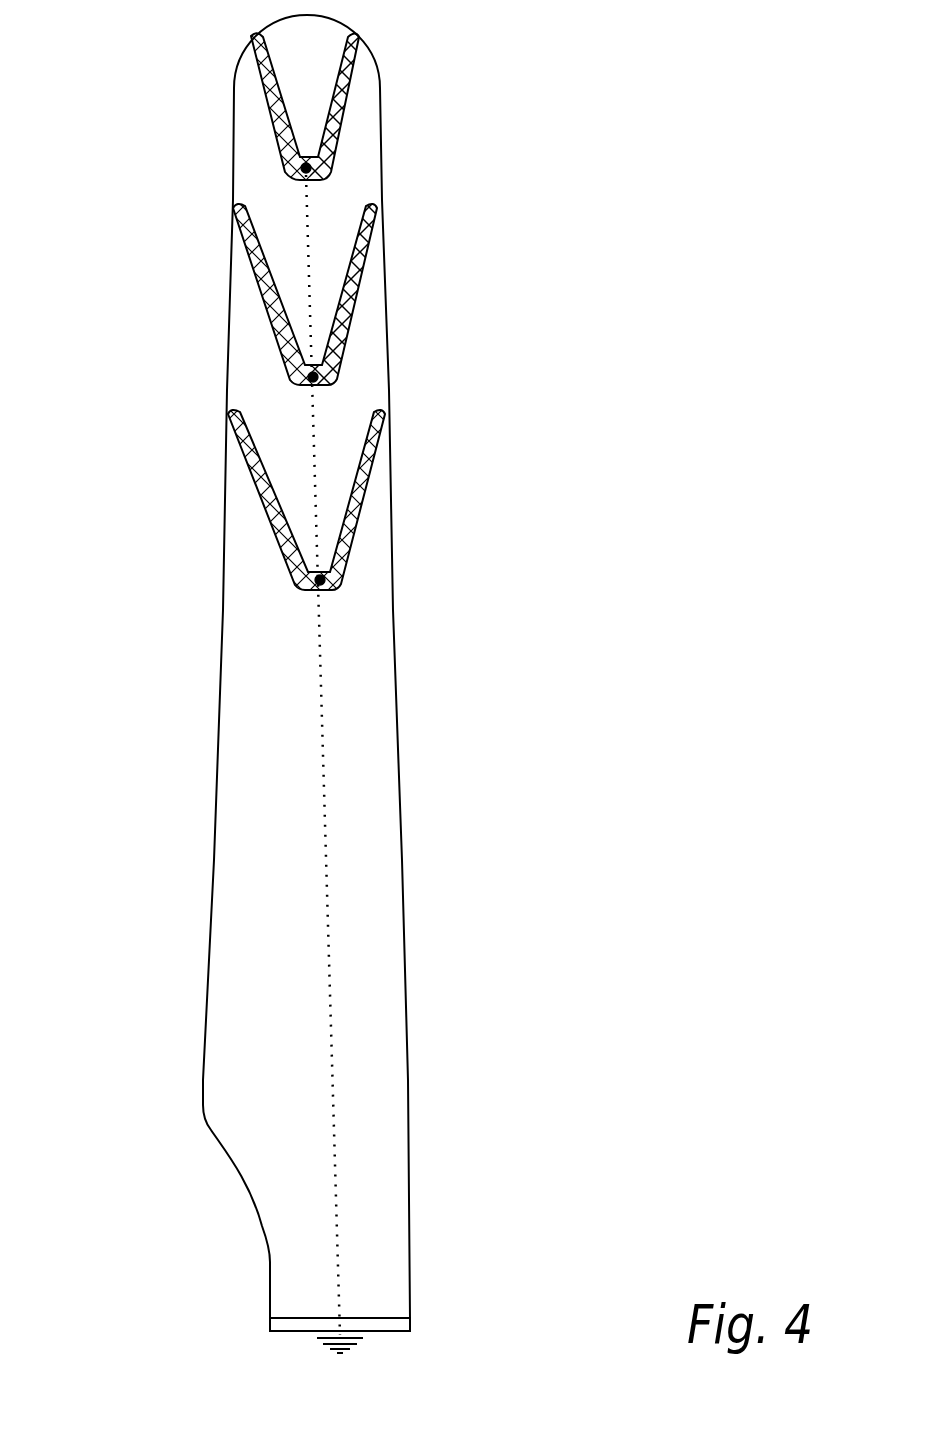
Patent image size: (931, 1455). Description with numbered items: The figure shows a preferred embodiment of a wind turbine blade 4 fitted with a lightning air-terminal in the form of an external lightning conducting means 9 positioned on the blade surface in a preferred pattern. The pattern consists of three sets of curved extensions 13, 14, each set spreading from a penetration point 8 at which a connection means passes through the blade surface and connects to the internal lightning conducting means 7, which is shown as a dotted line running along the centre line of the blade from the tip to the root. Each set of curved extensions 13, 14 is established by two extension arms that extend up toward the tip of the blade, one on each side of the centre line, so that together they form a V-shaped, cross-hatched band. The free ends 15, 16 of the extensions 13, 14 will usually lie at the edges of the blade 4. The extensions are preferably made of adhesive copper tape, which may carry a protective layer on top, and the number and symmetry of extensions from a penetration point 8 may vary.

The blade 4 is at (396, 680).
The internal lightning conducting means 7 is at (332, 928).
The penetration point 8 is at (335, 572).
The external lightning conducting means 9 is at (380, 480).
The curved extension 13 is at (247, 283).
The curved extension 14 is at (370, 264).
The free end 15 is at (240, 208).
The free end 16 is at (378, 200).